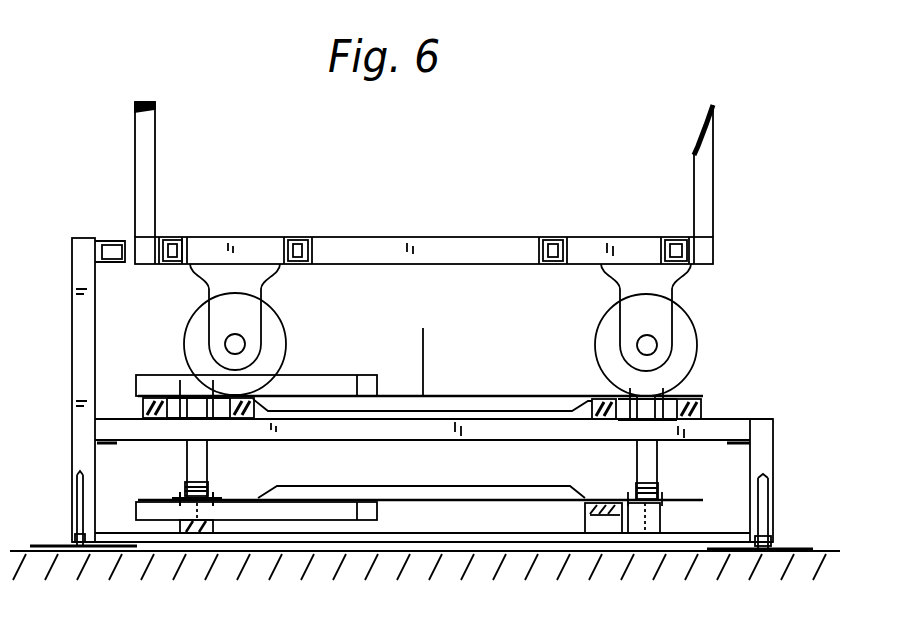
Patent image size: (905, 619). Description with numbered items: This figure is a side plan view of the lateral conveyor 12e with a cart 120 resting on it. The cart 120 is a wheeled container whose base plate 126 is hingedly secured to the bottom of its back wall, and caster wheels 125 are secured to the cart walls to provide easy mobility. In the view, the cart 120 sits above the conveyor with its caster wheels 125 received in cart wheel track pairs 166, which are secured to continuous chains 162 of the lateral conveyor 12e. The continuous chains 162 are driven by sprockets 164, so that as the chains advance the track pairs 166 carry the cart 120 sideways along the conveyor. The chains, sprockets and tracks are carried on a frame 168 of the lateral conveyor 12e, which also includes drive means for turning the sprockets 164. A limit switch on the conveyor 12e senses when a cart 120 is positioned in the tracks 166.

The lateral conveyor 12e is at (54, 293).
The cart 120 is at (200, 215).
The base plate 126 is at (486, 232).
The caster wheels 125 is at (676, 288).
The cart wheel track pairs 166 is at (687, 399).
The continuous chains 162 is at (664, 413).
The sprockets 164 is at (208, 460).
The frame 168 is at (774, 456).